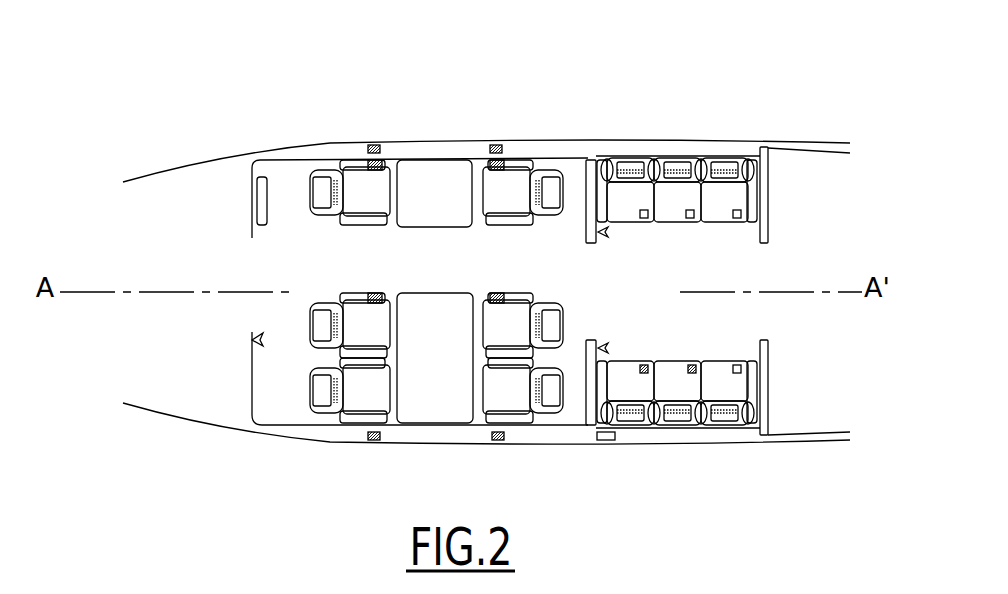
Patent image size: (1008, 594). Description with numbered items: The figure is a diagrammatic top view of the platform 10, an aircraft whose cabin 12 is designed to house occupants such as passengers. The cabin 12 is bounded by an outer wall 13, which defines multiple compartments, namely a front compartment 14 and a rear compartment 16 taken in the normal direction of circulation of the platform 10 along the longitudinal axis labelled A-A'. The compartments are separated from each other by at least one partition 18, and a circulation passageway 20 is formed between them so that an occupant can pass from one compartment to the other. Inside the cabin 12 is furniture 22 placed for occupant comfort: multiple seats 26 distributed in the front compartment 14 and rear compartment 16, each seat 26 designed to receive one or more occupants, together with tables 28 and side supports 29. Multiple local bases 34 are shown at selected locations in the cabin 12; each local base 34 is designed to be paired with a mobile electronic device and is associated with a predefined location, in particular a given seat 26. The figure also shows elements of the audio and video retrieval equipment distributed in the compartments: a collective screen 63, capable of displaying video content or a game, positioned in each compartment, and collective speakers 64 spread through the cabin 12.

The platform 10 is at (784, 77).
The cabin 12 is at (571, 172).
The outer wall 13 is at (613, 140).
The front compartment 14 is at (432, 248).
The rear compartment 16 is at (737, 263).
The partition 18 is at (592, 200).
The circulation passageway 20 is at (580, 292).
The furniture 22 is at (299, 452).
The seat 26 is at (355, 181).
The table 28 is at (420, 175).
The side support 29 is at (548, 150).
The local base 34 is at (373, 146).
The collective screen 63 is at (257, 195).
The collective speaker 64 is at (265, 340).